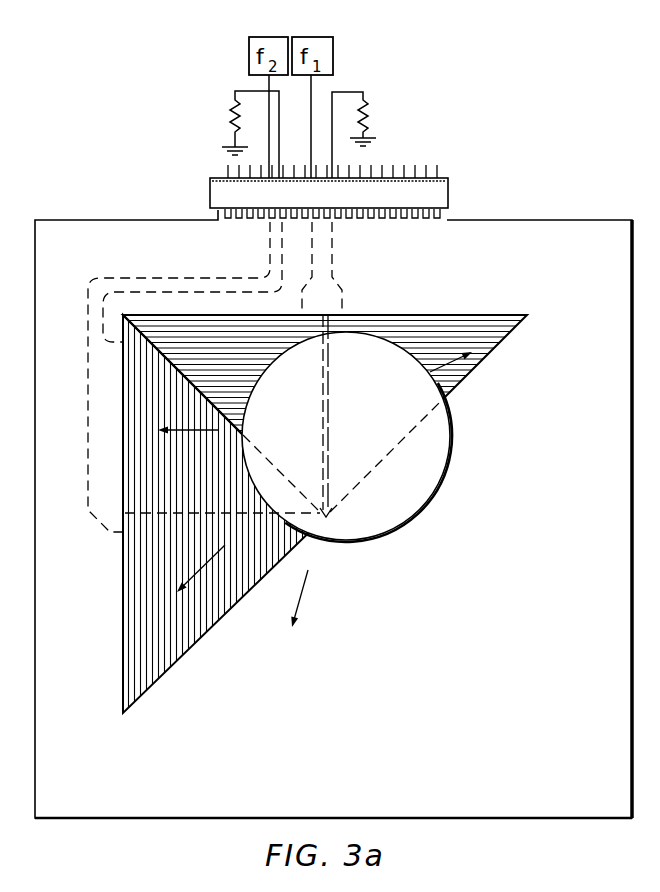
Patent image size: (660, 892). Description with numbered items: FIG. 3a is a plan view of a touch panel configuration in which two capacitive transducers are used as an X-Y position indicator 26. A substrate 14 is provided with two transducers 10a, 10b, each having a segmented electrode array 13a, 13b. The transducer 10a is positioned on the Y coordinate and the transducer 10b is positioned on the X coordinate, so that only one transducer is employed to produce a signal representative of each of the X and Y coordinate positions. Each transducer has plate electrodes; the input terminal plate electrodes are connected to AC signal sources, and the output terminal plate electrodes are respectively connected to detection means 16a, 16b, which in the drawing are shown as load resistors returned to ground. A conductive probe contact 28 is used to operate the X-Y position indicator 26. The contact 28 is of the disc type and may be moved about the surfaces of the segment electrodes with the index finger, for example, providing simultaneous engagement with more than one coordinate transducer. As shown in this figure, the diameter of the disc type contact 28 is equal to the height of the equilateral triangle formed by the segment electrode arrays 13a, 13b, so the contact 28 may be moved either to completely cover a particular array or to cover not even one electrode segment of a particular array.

The substrate 14 is at (572, 218).
The X-Y position indicator 26 is at (121, 217).
The detection means 16a is at (366, 108).
The detection means 16b is at (233, 108).
The transducer 10a is at (464, 322).
The transducer 10b is at (126, 567).
The segmented electrode array 13a is at (241, 338).
The segmented electrode array 13b is at (137, 453).
The conductive probe contact 28 is at (368, 343).